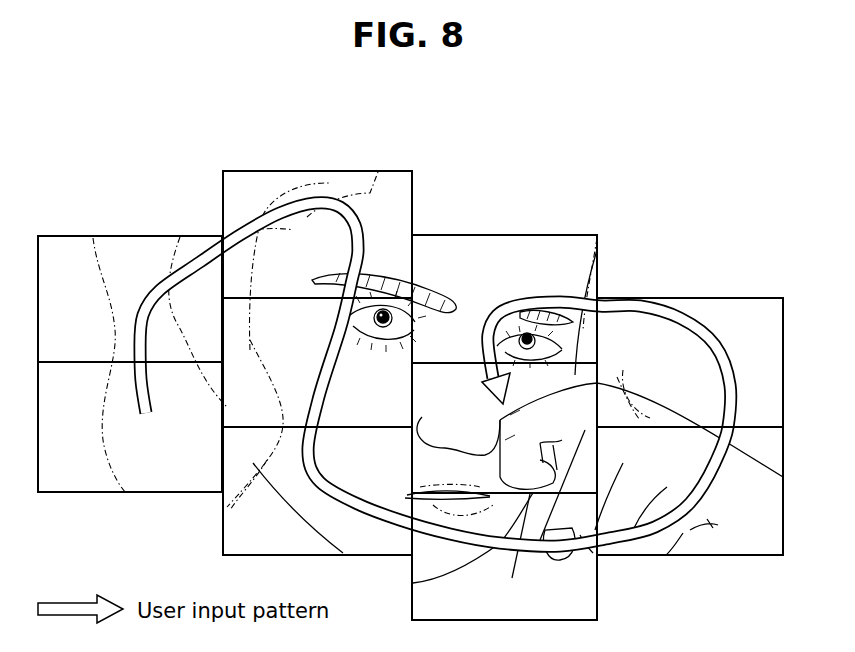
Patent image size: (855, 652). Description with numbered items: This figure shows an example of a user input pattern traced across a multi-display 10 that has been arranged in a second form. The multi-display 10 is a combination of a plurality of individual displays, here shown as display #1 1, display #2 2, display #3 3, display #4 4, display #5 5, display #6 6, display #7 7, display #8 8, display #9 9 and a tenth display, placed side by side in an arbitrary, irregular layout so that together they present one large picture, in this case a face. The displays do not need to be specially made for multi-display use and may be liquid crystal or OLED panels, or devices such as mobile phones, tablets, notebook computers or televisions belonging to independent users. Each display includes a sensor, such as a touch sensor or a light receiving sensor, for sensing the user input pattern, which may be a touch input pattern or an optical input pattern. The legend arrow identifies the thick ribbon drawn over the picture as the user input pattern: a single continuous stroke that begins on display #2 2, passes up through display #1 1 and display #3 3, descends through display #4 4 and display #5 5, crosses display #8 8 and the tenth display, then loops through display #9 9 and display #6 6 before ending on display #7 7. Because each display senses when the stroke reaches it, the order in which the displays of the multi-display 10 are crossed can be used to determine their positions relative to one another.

The multi-display 10 is at (410, 376).
The display # 1 is at (130, 299).
The display # 2 is at (130, 427).
The display # 3 is at (317, 234).
The display # 4 is at (317, 362).
The display # 5 is at (317, 491).
The display # 6 is at (504, 299).
The display # 7 is at (504, 428).
The display # 8 is at (504, 556).
The display # 9 is at (690, 362).